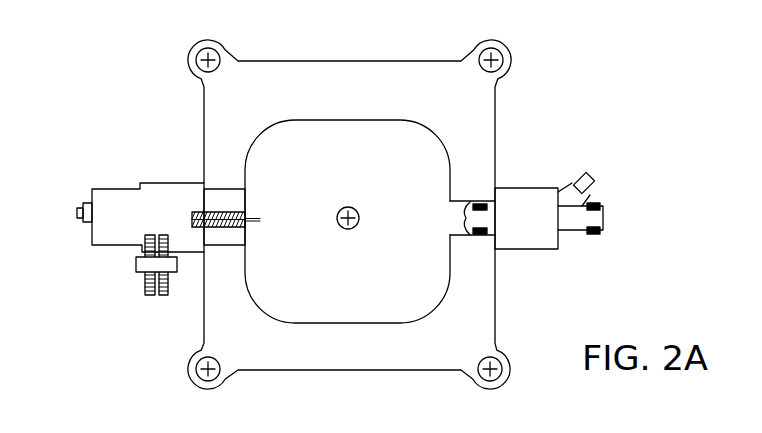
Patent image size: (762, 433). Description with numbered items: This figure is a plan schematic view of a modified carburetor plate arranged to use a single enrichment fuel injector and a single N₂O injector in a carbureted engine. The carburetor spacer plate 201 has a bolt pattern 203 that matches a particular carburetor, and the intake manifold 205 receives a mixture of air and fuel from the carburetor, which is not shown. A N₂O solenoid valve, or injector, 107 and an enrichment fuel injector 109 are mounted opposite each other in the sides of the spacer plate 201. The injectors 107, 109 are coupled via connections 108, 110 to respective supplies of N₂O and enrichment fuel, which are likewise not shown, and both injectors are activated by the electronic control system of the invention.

The carburetor spacer plate 201 is at (528, 353).
The bolt pattern 203 is at (218, 52).
The intake manifold 205 is at (358, 212).
The N₂O solenoid valve (injector) 107 is at (128, 203).
The connection 108 is at (155, 297).
The enrichment fuel injector 109 is at (535, 237).
The connection 110 is at (598, 218).